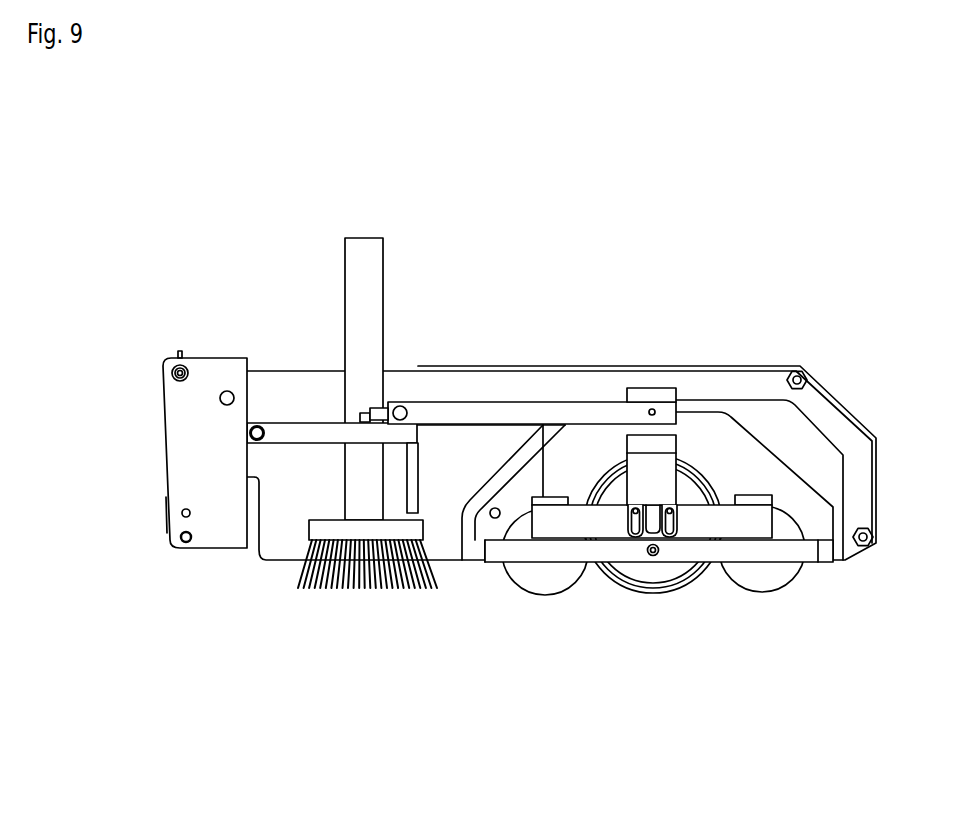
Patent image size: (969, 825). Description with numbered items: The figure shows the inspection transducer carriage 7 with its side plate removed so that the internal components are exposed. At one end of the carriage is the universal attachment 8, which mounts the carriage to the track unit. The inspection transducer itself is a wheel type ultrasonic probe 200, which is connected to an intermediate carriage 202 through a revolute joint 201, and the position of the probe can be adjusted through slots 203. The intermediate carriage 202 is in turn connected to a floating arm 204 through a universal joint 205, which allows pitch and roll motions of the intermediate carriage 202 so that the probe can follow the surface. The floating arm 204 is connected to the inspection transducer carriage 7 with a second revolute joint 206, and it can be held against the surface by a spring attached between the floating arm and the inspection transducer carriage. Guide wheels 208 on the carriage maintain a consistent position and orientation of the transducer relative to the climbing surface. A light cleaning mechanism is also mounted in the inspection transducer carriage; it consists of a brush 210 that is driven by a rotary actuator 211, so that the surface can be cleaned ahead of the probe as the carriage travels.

The inspection transducer carriage 7 is at (510, 352).
The universal attachment 8 is at (167, 526).
The wheel type ultrasonic probe 200 is at (659, 596).
The revolute joint 201 is at (650, 557).
The intermediate carriage 202 is at (470, 573).
The slots 203 is at (671, 531).
The floating arm 204 is at (562, 398).
The universal joint 205 is at (660, 394).
The revolute joint 206 is at (405, 399).
The guide wheels 208 is at (542, 598).
The brush 210 is at (370, 588).
The rotary actuator 211 is at (345, 317).